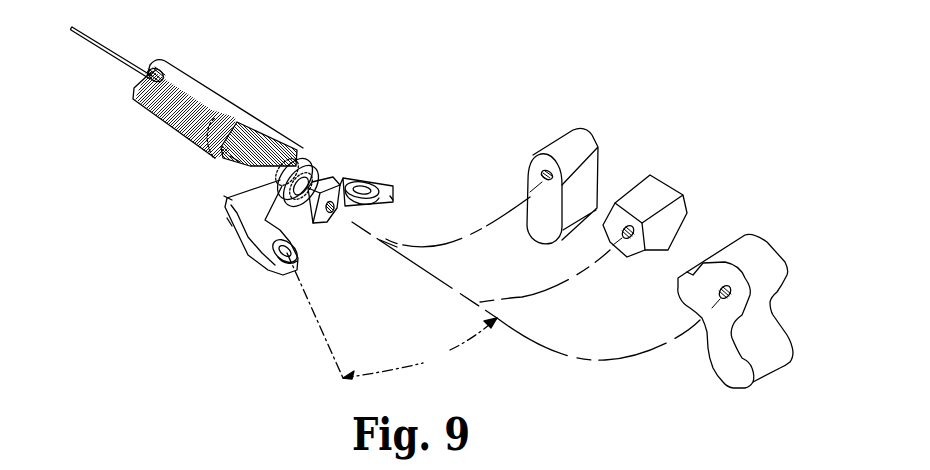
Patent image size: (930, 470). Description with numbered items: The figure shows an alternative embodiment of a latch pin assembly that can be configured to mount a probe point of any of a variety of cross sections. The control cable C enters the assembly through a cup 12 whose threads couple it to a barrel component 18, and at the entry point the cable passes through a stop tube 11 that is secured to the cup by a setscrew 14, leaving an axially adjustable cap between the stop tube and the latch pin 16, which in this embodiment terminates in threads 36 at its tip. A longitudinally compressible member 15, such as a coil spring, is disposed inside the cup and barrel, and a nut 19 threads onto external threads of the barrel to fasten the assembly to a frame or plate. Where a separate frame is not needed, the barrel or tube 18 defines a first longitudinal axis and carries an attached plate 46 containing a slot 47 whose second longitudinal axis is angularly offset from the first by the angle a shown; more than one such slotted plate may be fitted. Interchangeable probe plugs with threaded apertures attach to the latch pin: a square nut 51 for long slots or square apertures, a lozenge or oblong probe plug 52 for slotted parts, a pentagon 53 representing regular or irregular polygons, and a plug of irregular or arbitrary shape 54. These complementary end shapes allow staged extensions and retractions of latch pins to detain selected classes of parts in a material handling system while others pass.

The control cable C is at (113, 60).
The stop tube 11 is at (135, 64).
The cup 12 is at (155, 113).
The setscrew 14 is at (143, 75).
The longitudinally compressible member 15 is at (232, 124).
The latch pin 16 is at (236, 160).
The barrel component 18 is at (228, 196).
The nut 19 is at (313, 162).
The threads 36 is at (335, 213).
The plate 46 is at (227, 222).
The slot 47 is at (280, 256).
The square nut 51 is at (342, 178).
The oblong probe plug 52 is at (586, 130).
The pentagon probe plug 53 is at (664, 182).
The probe plug of irregular or arbitrary shape 54 is at (765, 238).
The angle a is at (420, 348).